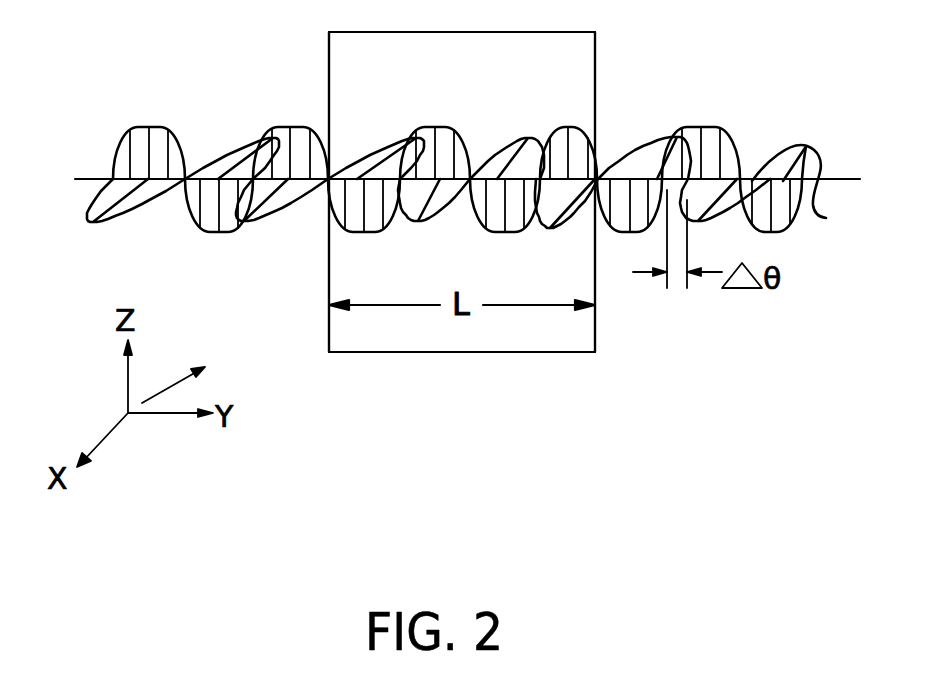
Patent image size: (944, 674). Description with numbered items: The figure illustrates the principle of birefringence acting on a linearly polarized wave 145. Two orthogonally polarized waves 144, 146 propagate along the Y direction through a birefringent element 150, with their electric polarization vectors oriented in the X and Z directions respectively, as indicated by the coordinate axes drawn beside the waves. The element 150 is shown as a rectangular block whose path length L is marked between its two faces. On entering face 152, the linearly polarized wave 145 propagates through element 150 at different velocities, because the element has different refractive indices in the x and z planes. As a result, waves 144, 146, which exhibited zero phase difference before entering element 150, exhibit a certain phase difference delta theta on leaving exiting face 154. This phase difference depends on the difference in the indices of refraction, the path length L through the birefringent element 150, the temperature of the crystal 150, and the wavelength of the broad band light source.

The orthogonally polarized wave 144 is at (122, 143).
The linearly polarized wave 145 is at (196, 369).
The orthogonally polarized wave 146 is at (133, 211).
The birefringent element 150 is at (596, 324).
The entering face 152 is at (329, 84).
The exiting face 154 is at (596, 99).